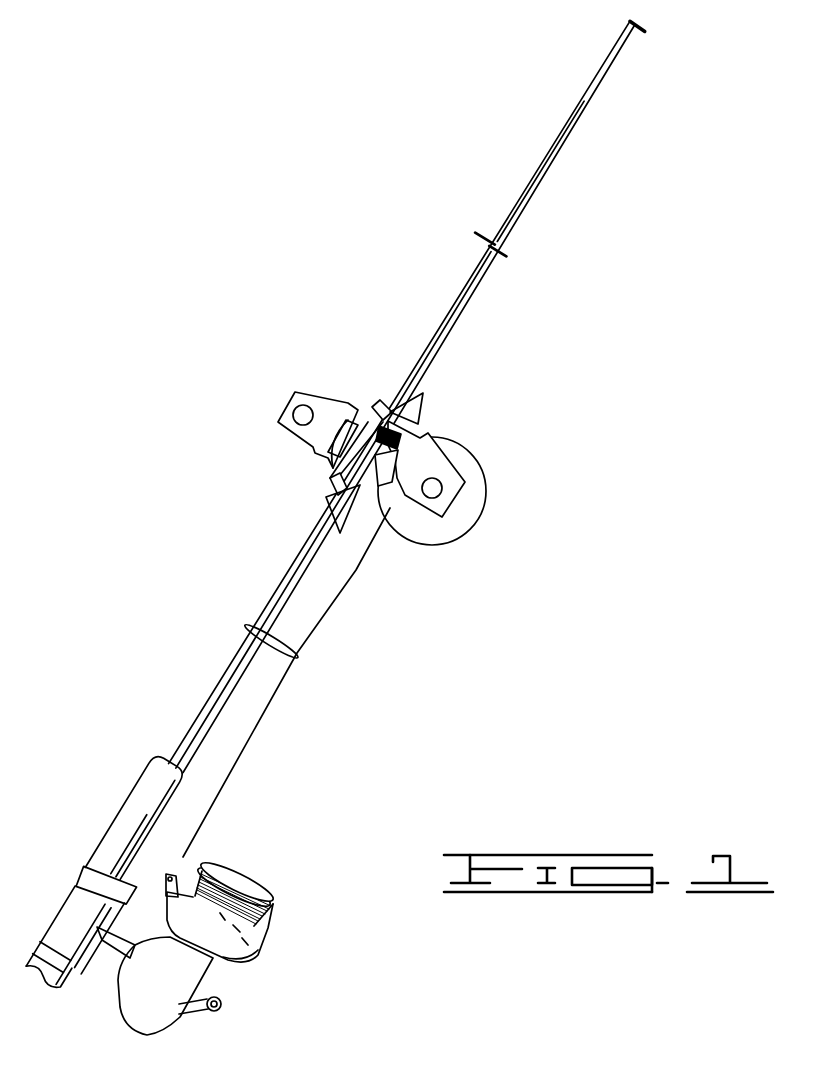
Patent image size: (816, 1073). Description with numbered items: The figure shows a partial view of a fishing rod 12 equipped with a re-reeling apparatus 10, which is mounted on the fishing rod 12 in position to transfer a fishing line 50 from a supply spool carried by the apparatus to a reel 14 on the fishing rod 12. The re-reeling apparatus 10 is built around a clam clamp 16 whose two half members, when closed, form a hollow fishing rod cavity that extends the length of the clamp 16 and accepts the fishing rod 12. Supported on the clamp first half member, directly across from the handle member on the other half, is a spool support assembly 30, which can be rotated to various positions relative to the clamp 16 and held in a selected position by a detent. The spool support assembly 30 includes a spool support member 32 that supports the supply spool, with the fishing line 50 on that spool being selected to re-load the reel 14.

The re-reeling apparatus 10 is at (338, 521).
The fishing rod 12 is at (207, 697).
The reel 14 is at (260, 920).
The clamp 16 is at (330, 508).
The spool support assembly 30 is at (483, 536).
The spool support member 32 is at (418, 472).
The fishing line 50 is at (253, 730).